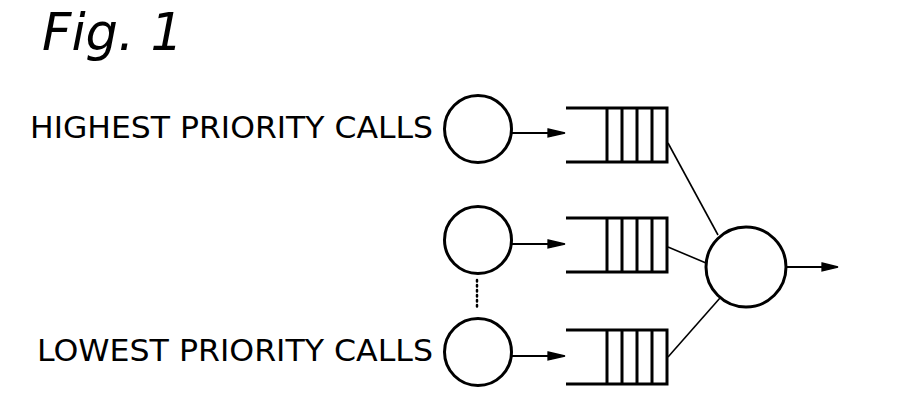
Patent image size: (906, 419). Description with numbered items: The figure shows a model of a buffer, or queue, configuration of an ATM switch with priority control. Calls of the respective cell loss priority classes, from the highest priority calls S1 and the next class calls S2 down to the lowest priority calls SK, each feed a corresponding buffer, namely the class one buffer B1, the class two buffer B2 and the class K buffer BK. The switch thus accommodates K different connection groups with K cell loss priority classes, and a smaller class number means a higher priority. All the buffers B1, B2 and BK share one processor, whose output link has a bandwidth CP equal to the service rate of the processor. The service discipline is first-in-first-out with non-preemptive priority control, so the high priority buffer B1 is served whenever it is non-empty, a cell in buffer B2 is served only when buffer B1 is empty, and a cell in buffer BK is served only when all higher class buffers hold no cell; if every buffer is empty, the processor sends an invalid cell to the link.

The class 1 calls S1 is at (505, 129).
The class 2 calls S2 is at (505, 240).
The class K calls SK is at (505, 352).
The class 1 buffer B1 is at (642, 148).
The class 2 buffer B2 is at (636, 221).
The class K buffer BK is at (643, 334).
The output link bandwidth CP is at (772, 251).